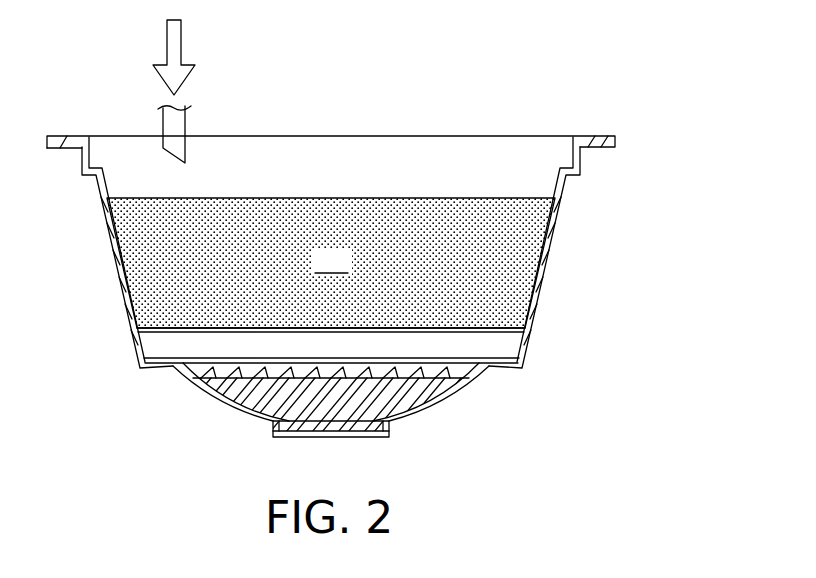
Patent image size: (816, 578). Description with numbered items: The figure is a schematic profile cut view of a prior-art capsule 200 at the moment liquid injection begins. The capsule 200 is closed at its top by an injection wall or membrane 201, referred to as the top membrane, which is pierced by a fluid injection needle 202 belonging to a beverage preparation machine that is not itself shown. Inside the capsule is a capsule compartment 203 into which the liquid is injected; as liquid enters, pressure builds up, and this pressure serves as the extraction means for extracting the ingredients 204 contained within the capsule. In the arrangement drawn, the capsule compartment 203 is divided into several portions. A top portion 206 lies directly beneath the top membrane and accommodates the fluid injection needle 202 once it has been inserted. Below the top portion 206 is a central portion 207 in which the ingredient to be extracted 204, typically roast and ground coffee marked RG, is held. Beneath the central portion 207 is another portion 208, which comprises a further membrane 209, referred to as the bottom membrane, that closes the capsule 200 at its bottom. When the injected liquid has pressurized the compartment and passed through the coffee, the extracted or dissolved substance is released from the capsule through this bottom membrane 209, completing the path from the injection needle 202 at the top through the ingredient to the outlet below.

The capsule 200 is at (513, 425).
The injection wall or membrane 201 is at (397, 136).
The fluid injection needle 202 is at (187, 113).
The capsule compartment 203 is at (118, 179).
The ingredients 204 is at (463, 218).
The top portion 206 is at (309, 153).
The central portion 207 is at (520, 270).
The another portion 208 is at (500, 347).
The bottom membrane 209 is at (288, 437).